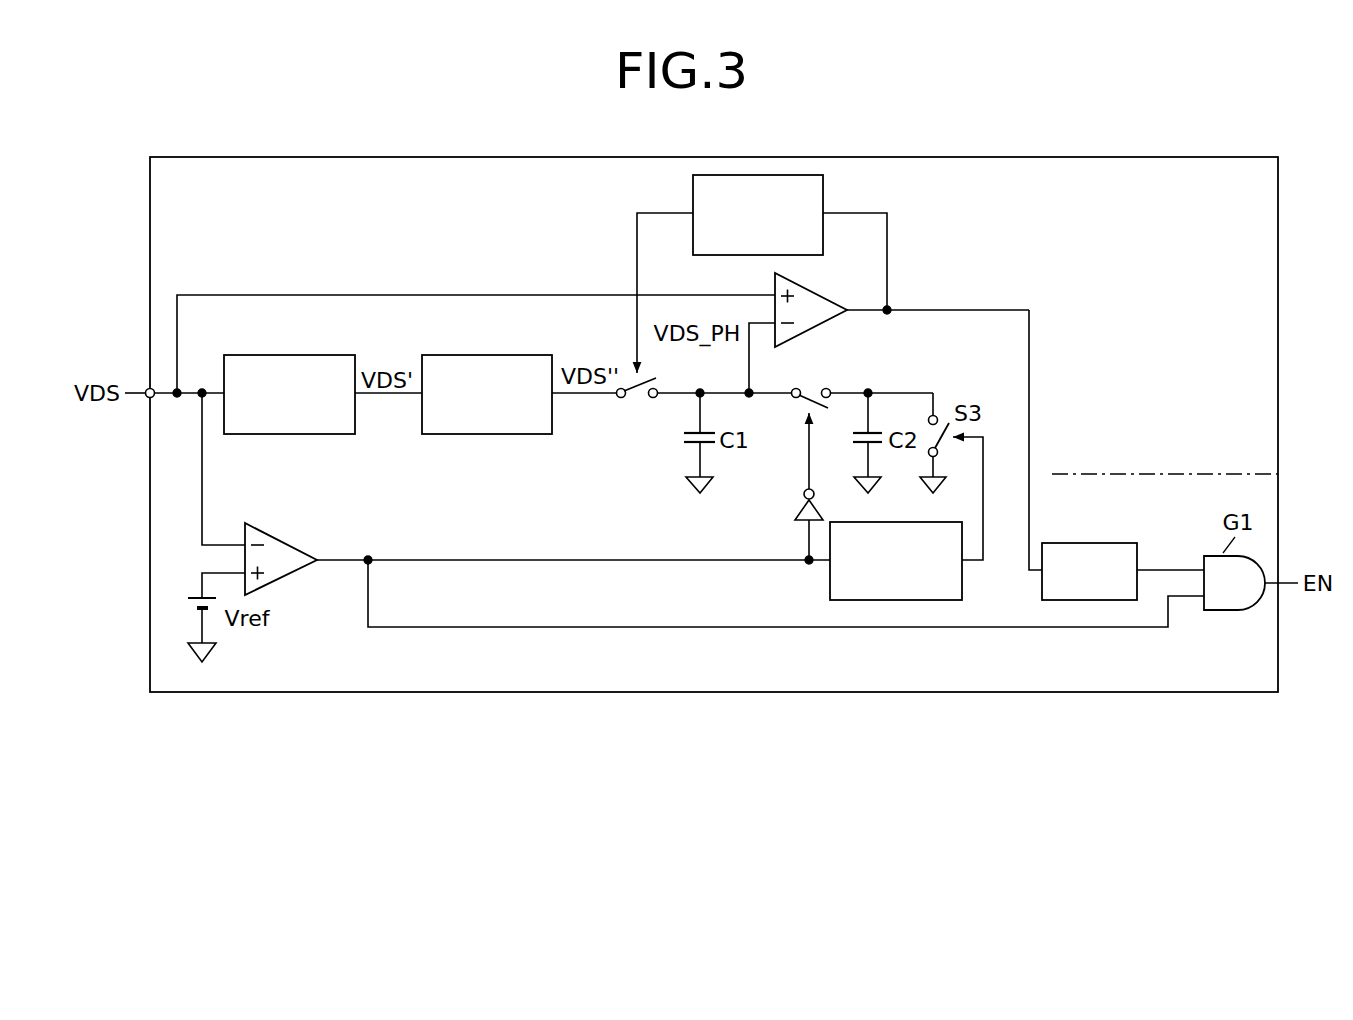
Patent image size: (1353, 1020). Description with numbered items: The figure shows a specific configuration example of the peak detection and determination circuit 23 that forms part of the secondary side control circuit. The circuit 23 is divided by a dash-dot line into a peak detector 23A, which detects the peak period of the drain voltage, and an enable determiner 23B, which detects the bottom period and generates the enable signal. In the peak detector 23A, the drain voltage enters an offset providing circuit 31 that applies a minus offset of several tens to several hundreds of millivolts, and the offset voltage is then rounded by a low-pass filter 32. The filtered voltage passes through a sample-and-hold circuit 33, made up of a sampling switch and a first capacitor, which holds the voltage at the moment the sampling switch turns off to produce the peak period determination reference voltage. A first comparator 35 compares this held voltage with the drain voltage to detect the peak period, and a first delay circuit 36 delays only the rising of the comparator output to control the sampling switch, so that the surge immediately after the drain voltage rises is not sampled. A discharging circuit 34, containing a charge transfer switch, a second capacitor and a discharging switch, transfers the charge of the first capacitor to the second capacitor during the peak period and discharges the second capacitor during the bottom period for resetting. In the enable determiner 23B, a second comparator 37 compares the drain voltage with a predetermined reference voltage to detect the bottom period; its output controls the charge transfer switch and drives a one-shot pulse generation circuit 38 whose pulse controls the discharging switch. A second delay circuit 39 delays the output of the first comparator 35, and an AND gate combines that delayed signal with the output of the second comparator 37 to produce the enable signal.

The peak detection and determination circuit 23 is at (992, 152).
The peak detector 23A is at (1163, 474).
The enable determiner 23B is at (1163, 474).
The offset providing circuit 31 is at (297, 353).
The low-pass filter 32 is at (485, 353).
The sample-and-hold circuit 33 is at (648, 453).
The discharging circuit 34 is at (877, 382).
The comparator 35 is at (817, 292).
The delay circuit 36 is at (823, 198).
The comparator 37 is at (282, 537).
The one-shot pulse generation circuit 38 is at (828, 583).
The delay circuit 39 is at (1077, 540).